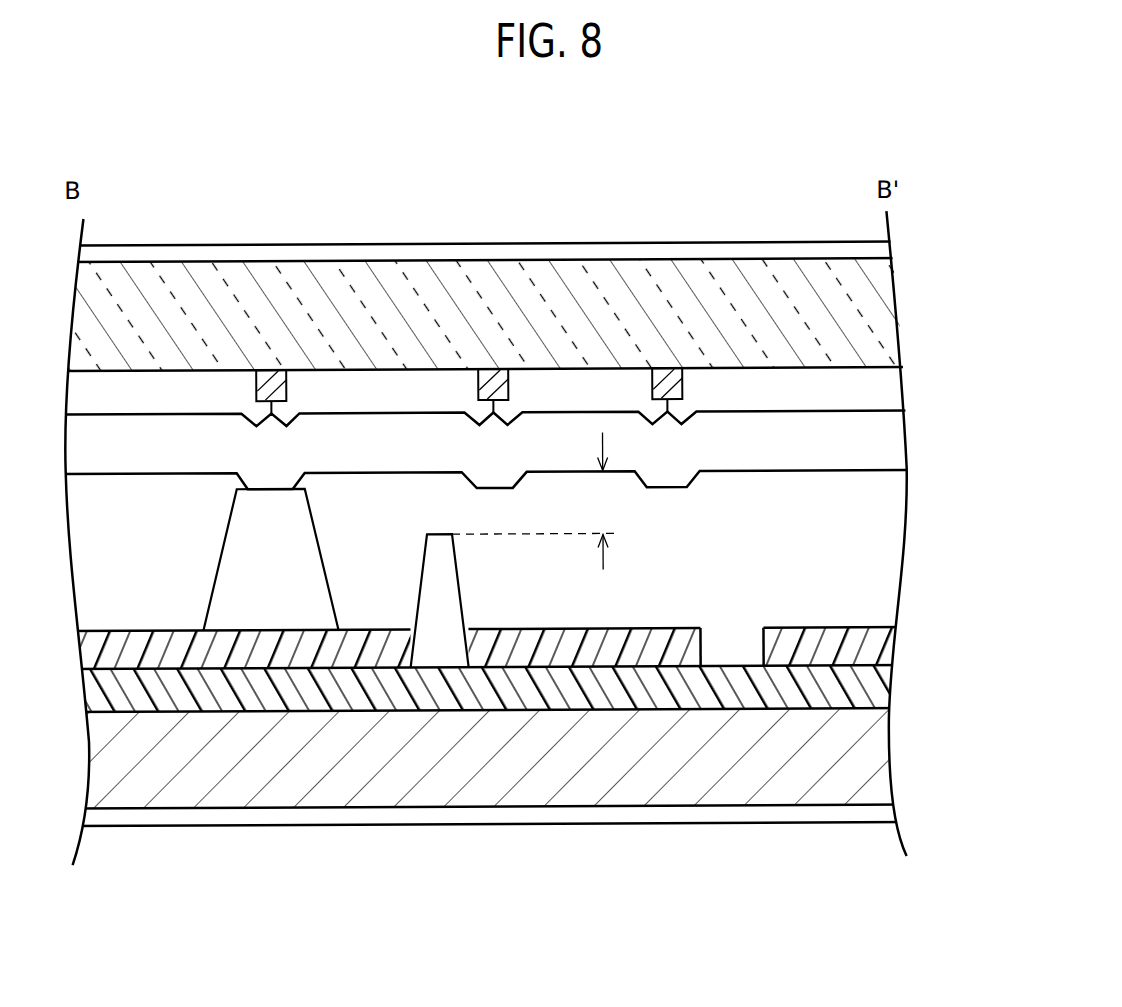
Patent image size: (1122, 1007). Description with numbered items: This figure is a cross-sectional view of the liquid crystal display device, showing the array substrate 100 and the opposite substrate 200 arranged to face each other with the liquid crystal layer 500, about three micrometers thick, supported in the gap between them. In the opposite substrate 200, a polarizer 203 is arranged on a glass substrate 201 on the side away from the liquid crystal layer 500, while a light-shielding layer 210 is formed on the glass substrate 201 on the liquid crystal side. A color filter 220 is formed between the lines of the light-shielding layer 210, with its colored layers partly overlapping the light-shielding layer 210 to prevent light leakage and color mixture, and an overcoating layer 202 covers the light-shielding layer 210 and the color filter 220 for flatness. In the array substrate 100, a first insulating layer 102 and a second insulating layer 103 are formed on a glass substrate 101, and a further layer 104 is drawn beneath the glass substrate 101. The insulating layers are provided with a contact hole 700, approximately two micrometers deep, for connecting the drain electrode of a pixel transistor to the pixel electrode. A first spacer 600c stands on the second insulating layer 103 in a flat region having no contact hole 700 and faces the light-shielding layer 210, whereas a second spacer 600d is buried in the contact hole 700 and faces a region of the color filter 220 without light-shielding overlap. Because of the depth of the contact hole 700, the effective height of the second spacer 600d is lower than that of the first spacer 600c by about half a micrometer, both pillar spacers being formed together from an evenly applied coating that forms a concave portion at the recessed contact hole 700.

The opposite substrate 200 is at (1020, 245).
The polarizer 203 is at (896, 250).
The glass substrate 201 is at (897, 319).
The color filter 220 is at (898, 389).
The light-shielding layer 210 is at (275, 369).
The overcoating layer 202 is at (898, 442).
The liquid crystal layer 500 is at (887, 558).
The first spacer 600c is at (272, 615).
The second spacer 600d is at (447, 645).
The contact hole 700 is at (733, 640).
The array substrate 100 is at (1020, 629).
The second insulating layer 103 is at (885, 646).
The first insulating layer 102 is at (885, 687).
The glass substrate 101 is at (885, 750).
The polarizing plate 104 is at (885, 814).